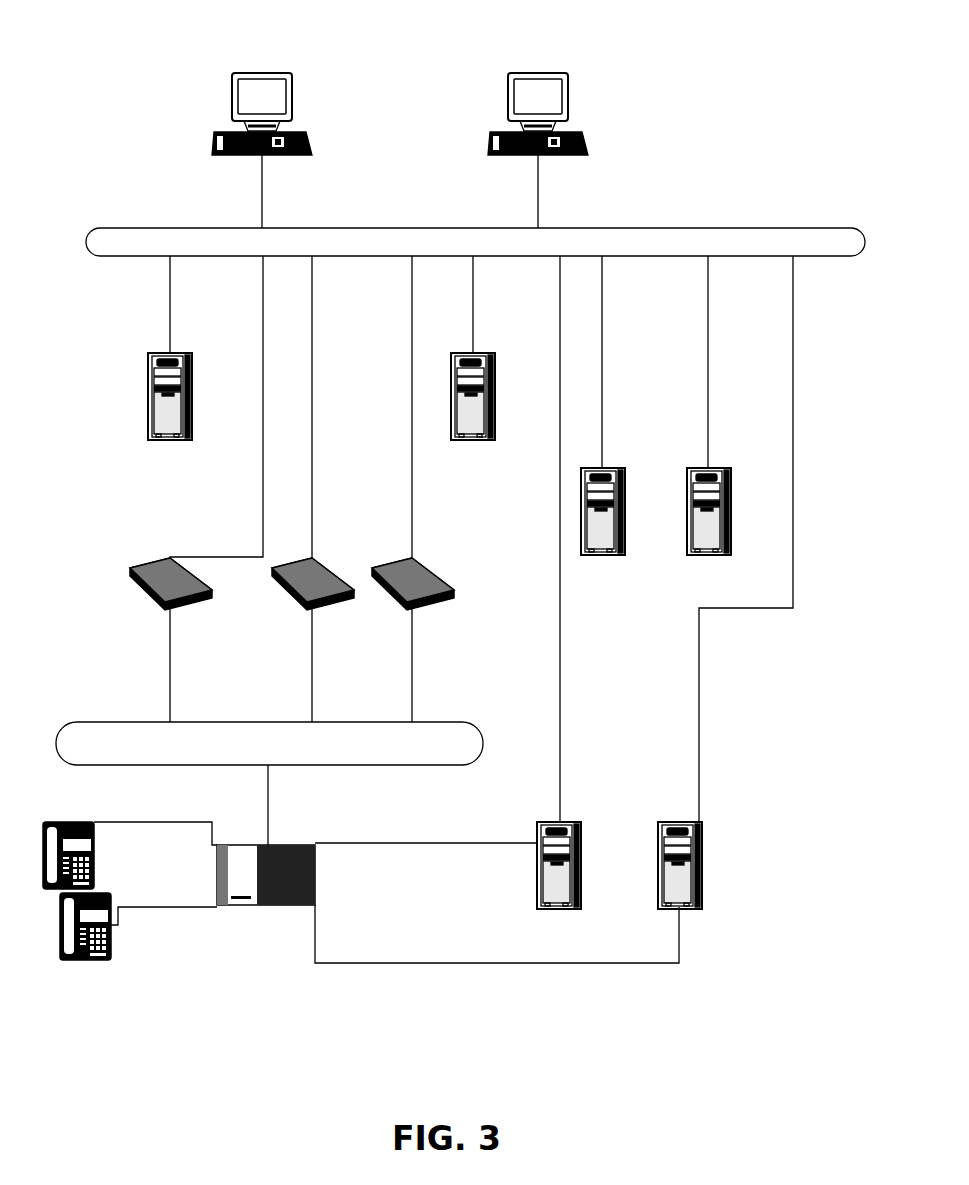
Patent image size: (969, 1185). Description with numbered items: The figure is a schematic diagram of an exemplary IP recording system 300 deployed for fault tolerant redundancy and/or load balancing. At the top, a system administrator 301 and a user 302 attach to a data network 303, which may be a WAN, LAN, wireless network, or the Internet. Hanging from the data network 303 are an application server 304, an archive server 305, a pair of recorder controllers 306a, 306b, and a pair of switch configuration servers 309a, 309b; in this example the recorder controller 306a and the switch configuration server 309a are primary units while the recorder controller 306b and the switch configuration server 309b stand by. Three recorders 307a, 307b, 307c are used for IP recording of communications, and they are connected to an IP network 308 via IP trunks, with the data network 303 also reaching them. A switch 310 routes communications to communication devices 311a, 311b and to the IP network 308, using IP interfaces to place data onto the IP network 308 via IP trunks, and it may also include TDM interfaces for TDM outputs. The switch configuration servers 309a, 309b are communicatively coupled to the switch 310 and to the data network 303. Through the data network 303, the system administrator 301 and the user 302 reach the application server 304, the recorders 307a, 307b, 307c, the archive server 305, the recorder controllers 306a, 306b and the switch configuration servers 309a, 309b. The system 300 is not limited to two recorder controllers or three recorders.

The IP recording system 300 is at (415, 481).
The system administrator 301 is at (286, 114).
The user 302 is at (562, 114).
The data network 303 is at (475, 242).
The application server 304 is at (193, 396).
The archive server 305 is at (497, 396).
The recorder controller 306a is at (632, 511).
The recorder controller 306b is at (739, 511).
The recorder 307a is at (201, 584).
The recorder 307b is at (312, 558).
The recorder 307c is at (443, 584).
The IP network 308 is at (269, 743).
The switch configuration server 309a is at (589, 865).
The switch configuration server 309b is at (710, 865).
The switch 310 is at (290, 875).
The communication device 311a is at (98, 855).
The communication device 311b is at (115, 926).